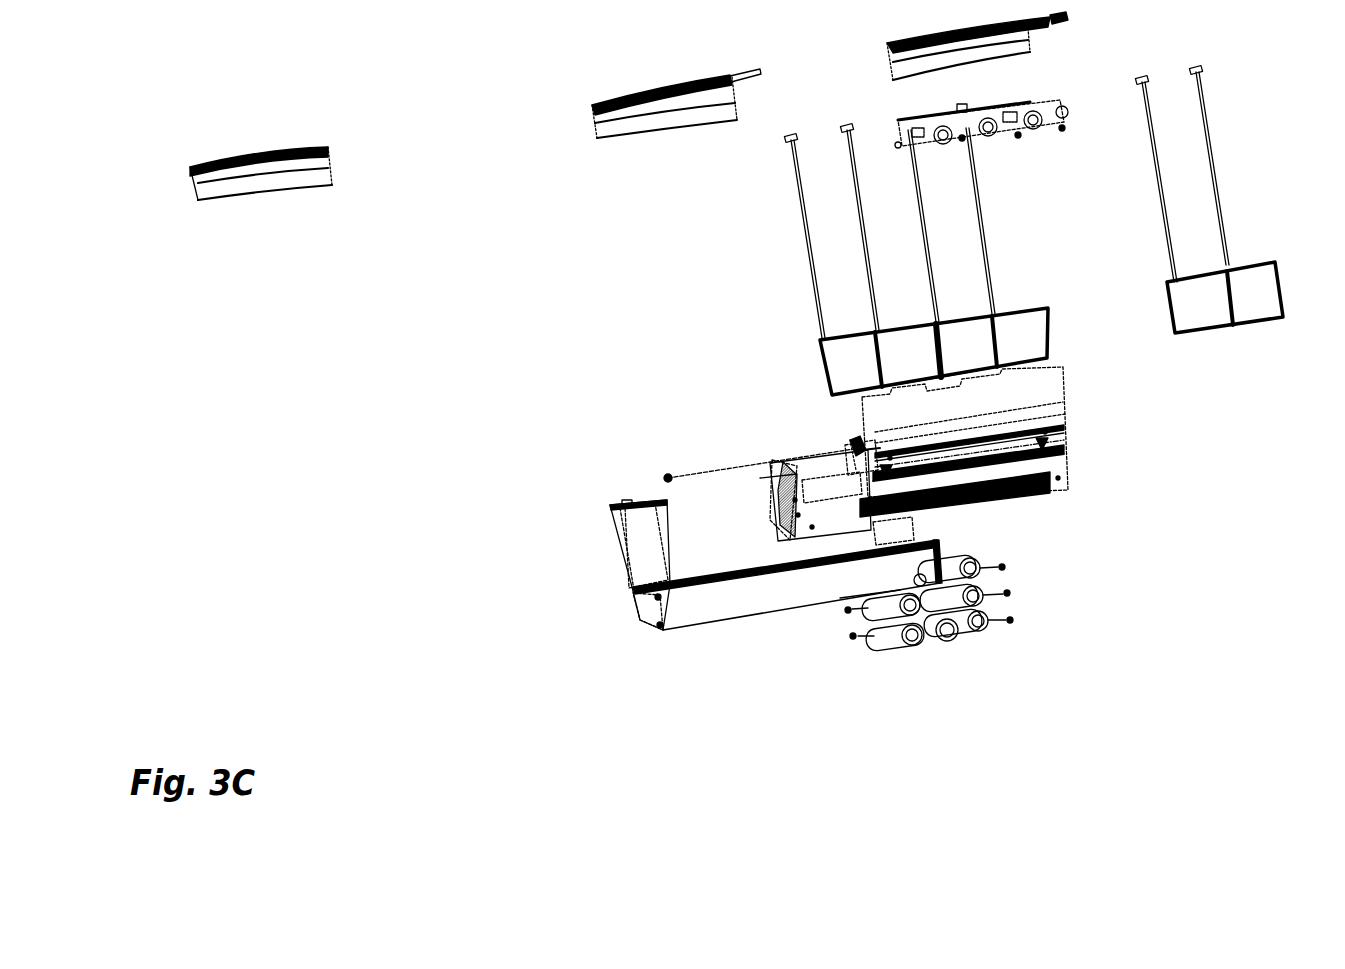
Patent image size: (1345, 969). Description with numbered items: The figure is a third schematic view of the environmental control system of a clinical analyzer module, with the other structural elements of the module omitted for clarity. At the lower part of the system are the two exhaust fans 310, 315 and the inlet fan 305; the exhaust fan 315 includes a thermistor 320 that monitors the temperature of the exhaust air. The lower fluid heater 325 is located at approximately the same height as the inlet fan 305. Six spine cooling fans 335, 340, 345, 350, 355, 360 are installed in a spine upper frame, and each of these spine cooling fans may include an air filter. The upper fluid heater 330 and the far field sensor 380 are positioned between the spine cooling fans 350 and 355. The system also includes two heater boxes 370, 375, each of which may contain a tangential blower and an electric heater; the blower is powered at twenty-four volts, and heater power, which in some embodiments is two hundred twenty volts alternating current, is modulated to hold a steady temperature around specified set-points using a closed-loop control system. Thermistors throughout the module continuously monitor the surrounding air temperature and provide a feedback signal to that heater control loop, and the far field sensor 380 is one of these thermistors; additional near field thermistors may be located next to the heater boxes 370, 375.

The inlet fan 305 is at (598, 120).
The exhaust fan 310 is at (340, 165).
The exhaust fan 315 is at (1013, 53).
The thermistor 320 is at (1053, 30).
The lower fluid heater 325 is at (975, 627).
The upper fluid heater 330 is at (945, 142).
The spine cooling fan 335 is at (850, 358).
The spine cooling fan 340 is at (907, 335).
The spine cooling fan 345 is at (967, 328).
The spine cooling fan 350 is at (1018, 324).
The spine cooling fan 355 is at (1188, 289).
The spine cooling fan 360 is at (1268, 298).
The heater box 370 is at (690, 608).
The heater box 375 is at (784, 512).
The far field sensor 380 is at (1068, 117).